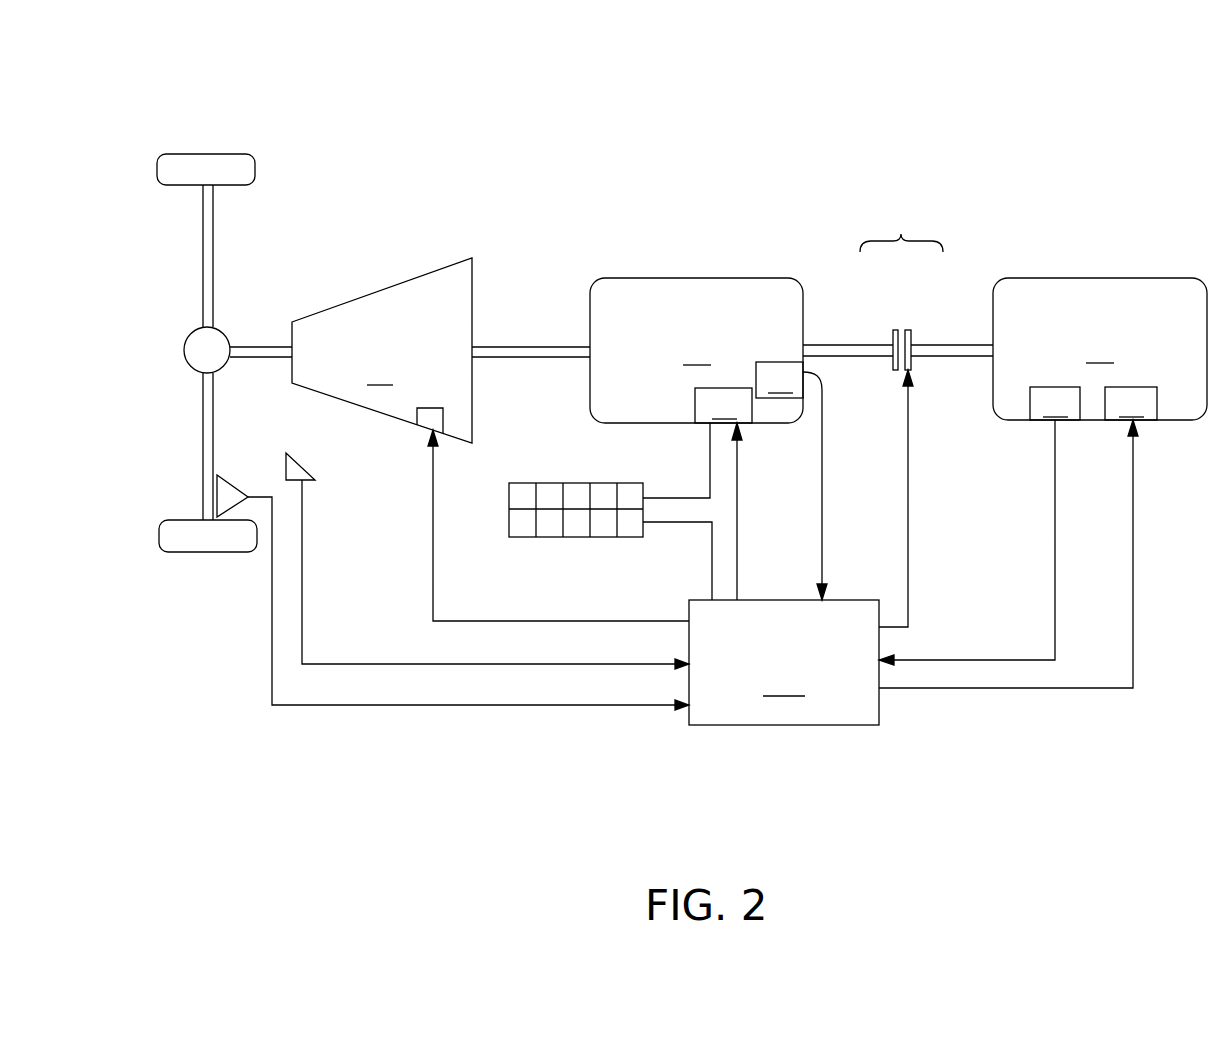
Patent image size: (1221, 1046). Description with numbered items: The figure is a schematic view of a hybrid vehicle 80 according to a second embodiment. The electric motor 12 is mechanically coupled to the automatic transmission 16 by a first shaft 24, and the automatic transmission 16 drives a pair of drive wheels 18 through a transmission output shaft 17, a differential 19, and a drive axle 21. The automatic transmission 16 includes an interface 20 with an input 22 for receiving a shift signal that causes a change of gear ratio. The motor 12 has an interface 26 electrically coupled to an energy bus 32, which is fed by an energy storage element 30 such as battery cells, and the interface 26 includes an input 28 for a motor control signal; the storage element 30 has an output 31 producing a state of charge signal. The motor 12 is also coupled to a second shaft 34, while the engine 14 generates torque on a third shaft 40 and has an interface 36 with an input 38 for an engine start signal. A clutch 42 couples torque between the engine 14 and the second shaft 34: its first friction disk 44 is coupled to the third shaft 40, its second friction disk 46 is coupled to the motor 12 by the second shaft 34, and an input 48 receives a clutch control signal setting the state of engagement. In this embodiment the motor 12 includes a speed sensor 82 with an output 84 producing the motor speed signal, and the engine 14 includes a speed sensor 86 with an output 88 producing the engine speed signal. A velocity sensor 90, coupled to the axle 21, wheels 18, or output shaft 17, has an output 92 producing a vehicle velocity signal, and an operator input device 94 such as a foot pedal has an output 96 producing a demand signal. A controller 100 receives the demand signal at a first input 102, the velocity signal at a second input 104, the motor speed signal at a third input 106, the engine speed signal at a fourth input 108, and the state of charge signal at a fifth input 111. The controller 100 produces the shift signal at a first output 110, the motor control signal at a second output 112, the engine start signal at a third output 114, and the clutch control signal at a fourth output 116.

The electric motor 12 is at (696, 350).
The engine 14 is at (1100, 349).
The automatic transmission 16 is at (382, 350).
The transmission output shaft 17 is at (253, 340).
The drive wheels 18 is at (255, 170).
The differential 19 is at (192, 350).
The interface 20 is at (437, 430).
The drive axle 21 is at (208, 455).
The input 22 is at (430, 434).
The first shaft 24 is at (528, 345).
The interface 26 is at (723, 405).
The input 28 is at (742, 425).
The energy storage element 30 is at (509, 522).
The output 31 is at (643, 537).
The energy bus 32 is at (710, 455).
The second shaft 34 is at (843, 343).
The interface 36 is at (1131, 403).
The input 38 is at (1135, 422).
The third shaft 40 is at (955, 343).
The clutch 42 is at (901, 283).
The first friction disk 44 is at (895, 330).
The second friction disk 46 is at (908, 330).
The input 48 is at (910, 372).
The hybrid vehicle 80 is at (960, 142).
The speed sensor 82 is at (779, 380).
The output 84 is at (808, 370).
The speed sensor 86 is at (1055, 403).
The output 88 is at (1053, 422).
The velocity sensor 90 is at (228, 478).
The output 92 is at (244, 497).
The operator input device 94 is at (302, 462).
The output 96 is at (303, 483).
The controller 100 is at (784, 662).
The first input 102 is at (689, 668).
The second input 104 is at (689, 708).
The third input 106 is at (828, 600).
The fourth input 108 is at (882, 664).
The first output 110 is at (689, 622).
The fifth input 111 is at (708, 600).
The second output 112 is at (745, 600).
The third output 114 is at (882, 692).
The fourth output 116 is at (882, 628).